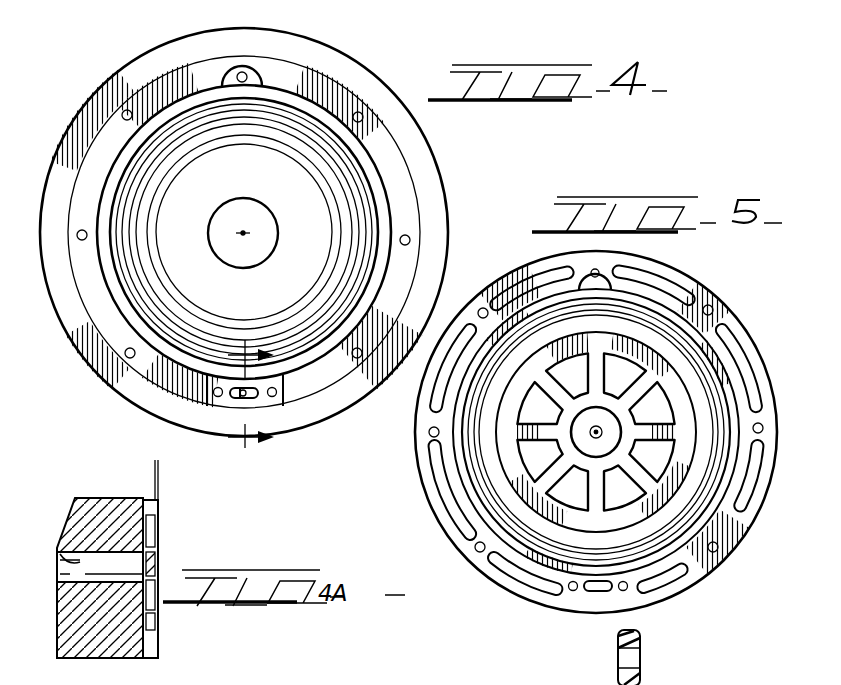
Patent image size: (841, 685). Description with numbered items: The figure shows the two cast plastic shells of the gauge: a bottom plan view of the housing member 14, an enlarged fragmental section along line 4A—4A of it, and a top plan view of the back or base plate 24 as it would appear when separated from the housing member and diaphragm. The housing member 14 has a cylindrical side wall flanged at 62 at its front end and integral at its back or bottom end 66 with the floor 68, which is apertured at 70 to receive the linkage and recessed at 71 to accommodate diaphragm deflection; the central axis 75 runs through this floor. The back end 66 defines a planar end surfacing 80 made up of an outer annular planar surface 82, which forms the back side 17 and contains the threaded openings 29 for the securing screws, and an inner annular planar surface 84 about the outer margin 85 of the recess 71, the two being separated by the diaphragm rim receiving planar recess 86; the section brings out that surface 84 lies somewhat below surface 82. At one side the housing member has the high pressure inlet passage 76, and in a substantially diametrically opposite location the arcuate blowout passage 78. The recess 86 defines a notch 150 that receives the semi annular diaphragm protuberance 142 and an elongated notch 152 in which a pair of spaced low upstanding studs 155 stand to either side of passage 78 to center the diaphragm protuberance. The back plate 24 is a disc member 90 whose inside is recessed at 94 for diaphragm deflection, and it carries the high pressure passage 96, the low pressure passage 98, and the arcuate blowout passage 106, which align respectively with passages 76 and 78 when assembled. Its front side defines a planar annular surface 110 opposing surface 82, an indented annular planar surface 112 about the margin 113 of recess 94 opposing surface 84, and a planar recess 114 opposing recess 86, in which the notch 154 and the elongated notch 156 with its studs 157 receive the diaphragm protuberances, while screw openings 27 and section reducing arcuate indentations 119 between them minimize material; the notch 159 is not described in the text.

In FIG. 4, the housing member 14 is at (269, 267).
In FIG. 4, the back or bottom side 17 is at (315, 388).
In FIG. 5, the back or base plate 24 is at (576, 450).
In FIG. 5, the openings 27 is at (483, 308).
In FIG. 4, the threaded openings 29 is at (125, 111).
In FIG. 4, the flange 62 is at (440, 195).
In FIG. 4, the back or bottom end 66 is at (360, 395).
In FIG. 4, the floor 68 is at (265, 181).
In FIG. 4, the aperture 70 is at (277, 228).
In FIG. 4, the recess 71 is at (307, 137).
In FIG. 4, the central axis 75 is at (243, 233).
In FIG. 4, the high pressure inlet passage 76 is at (250, 72).
In FIG. 4, the blowout passage 78 is at (239, 398).
In FIG. 4A, the blowout passage 78 is at (62, 558).
In FIG. 4, the planar end surfacing 80 is at (355, 120).
In FIG. 4, the outer annular planar surface 82 is at (445, 192).
In FIG. 4A, the outer annular planar surface 82 is at (160, 657).
In FIG. 4, the inner annular planar surface 84 is at (400, 190).
In FIG. 4A, the inner annular planar surface 84 is at (158, 515).
In FIG. 4, the outer margin 85 is at (367, 193).
In FIG. 4A, the outer margin 85 is at (143, 498).
In FIG. 4, the diaphragm rim receiving planar recess 86 is at (385, 272).
In FIG. 5, the disc member 90 is at (693, 598).
In FIG. 5, the recess 94 is at (472, 475).
In FIG. 5, the high pressure passage 96 is at (598, 278).
In FIG. 5, the low pressure passage 98 is at (596, 437).
In FIG. 5, the blowout passage 106 is at (606, 591).
In FIG. 5, the planar annular surface 110 is at (720, 318).
In FIG. 5, the annular planar surface 112 is at (680, 317).
In FIG. 5, the margin 113 is at (483, 478).
In FIG. 5, the planar recess 114 is at (732, 390).
In FIG. 5, the section reducing arcuate indentations 119 is at (735, 350).
In FIG. 5, the protuberance 142 is at (633, 656).
In FIG. 4, the notch 150 is at (224, 66).
In FIG. 4, the elongated notch 152 is at (258, 397).
In FIG. 4A, the elongated notch 152 is at (158, 617).
In FIG. 5, the notch 154 is at (589, 272).
In FIG. 4, the low upstanding studs 155 is at (217, 397).
In FIG. 4A, the low upstanding studs 155 is at (218, 562).
In FIG. 5, the elongated notch 156 is at (573, 591).
In FIG. 5, the low upstanding studs 157 is at (626, 591).
In FIG. 5, the slot 159 is at (560, 594).
In FIG. 4, the section line 4A— 4A is at (248, 397).